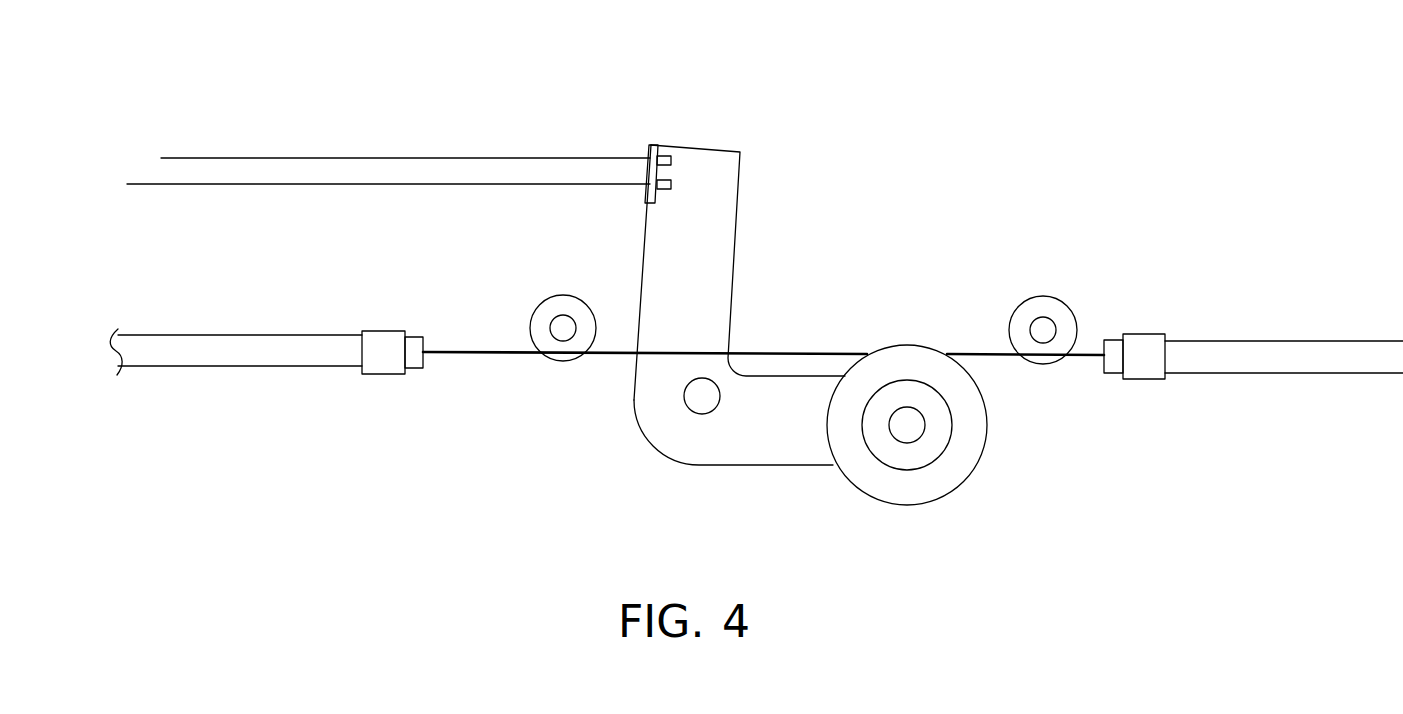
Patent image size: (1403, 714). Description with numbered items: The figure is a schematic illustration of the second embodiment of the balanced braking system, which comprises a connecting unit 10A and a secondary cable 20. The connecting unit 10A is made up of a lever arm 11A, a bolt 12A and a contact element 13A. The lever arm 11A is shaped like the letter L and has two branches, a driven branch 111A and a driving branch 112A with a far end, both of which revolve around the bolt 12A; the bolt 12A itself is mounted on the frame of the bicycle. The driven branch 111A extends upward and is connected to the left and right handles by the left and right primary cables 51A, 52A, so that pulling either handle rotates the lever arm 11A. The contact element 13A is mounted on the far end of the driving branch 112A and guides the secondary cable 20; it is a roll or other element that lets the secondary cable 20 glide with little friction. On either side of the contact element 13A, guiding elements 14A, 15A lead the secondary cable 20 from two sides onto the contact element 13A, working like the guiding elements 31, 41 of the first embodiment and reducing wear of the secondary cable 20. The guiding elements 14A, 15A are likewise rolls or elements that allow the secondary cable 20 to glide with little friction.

The connecting unit 10A is at (783, 165).
The lever arm 11A is at (762, 315).
The driven branch 111A is at (670, 275).
The driving branch 112A is at (782, 454).
The bolt 12A is at (697, 397).
The contact element 13A is at (917, 367).
The guiding element 14A is at (545, 320).
The guiding element 15A is at (1043, 310).
The secondary cable 20 is at (458, 357).
The guiding element 31 is at (221, 355).
The guiding element 41 is at (1282, 363).
The left primary cable 51A is at (390, 158).
The right primary cable 52A is at (432, 184).